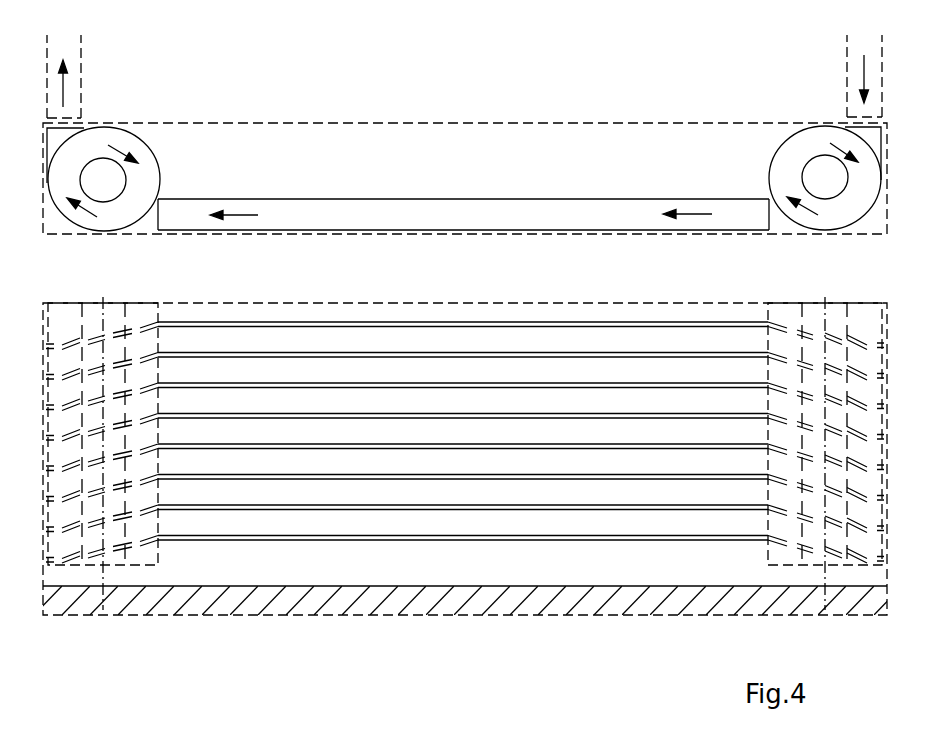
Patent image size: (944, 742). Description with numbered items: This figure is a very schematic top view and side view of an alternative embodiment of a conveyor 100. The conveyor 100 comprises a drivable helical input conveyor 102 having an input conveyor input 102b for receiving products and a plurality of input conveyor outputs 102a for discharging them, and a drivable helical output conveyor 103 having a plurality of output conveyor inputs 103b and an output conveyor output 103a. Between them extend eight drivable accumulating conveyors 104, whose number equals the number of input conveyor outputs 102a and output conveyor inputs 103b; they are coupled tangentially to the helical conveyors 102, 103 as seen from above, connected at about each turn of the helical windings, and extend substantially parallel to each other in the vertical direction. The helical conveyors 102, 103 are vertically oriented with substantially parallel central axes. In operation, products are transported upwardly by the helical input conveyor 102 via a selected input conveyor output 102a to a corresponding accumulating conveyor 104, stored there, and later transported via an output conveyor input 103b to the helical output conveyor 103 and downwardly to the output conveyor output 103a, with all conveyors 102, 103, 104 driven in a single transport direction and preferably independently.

The conveyor 100 is at (452, 101).
The helical input conveyor 102 is at (790, 152).
The input conveyor outputs 102a is at (773, 222).
The input conveyor input 102b is at (847, 130).
The helical output conveyor 103 is at (127, 147).
The output conveyor output 103a is at (63, 130).
The output conveyor inputs 103b is at (148, 222).
The accumulating conveyors 104 is at (443, 222).